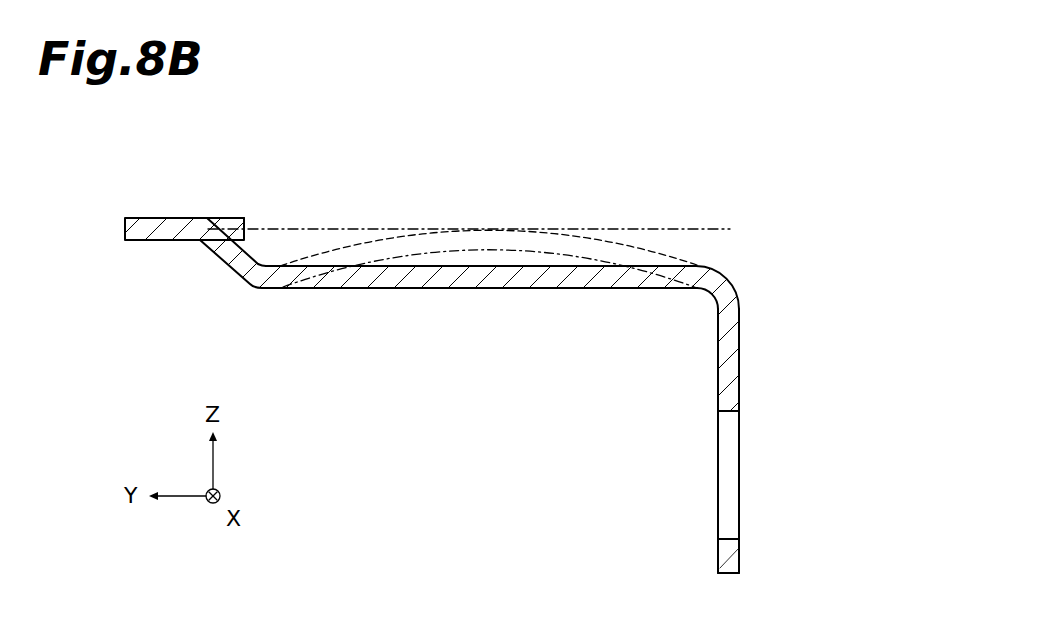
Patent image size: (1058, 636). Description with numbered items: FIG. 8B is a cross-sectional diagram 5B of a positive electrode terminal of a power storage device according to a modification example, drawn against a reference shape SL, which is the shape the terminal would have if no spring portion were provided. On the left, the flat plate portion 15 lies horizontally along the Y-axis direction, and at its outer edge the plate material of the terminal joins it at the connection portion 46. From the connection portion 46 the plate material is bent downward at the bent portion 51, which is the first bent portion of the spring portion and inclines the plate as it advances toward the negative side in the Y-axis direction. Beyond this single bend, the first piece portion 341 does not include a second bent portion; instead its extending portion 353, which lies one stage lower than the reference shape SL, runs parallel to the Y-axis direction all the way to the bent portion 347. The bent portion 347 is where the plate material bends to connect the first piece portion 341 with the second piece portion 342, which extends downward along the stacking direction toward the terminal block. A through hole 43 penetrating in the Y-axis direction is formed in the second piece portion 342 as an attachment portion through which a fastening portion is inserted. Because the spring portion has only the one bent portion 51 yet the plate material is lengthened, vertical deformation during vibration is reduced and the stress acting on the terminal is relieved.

The fuel cell stack / panel assembly 5B is at (413, 153).
The flat plate portion 15 is at (128, 213).
The connection portion 46 is at (213, 213).
The reference shape SL is at (665, 228).
The bent portion 51 is at (214, 268).
The first piece portion 341 is at (544, 302).
The bent portion 347 is at (737, 280).
The second piece portion 342 is at (752, 347).
The through hole 43 is at (730, 412).
The extending portion 353 is at (455, 290).